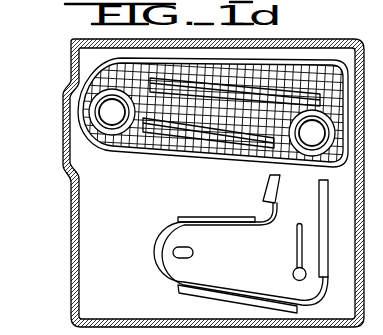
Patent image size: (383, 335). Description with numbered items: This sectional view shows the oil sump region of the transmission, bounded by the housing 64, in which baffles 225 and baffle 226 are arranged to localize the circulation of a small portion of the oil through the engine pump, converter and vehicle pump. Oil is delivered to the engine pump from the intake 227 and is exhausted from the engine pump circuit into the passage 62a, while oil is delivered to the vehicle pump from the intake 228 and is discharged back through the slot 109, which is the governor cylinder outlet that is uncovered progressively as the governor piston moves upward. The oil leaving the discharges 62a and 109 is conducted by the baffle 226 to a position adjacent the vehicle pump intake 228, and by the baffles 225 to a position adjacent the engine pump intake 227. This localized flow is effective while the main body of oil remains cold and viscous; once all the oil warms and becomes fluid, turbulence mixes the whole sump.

The housing 64 is at (80, 267).
The vehicle pump intake 228 is at (178, 102).
The engine pump intake 227 is at (110, 113).
The baffles 225 is at (224, 122).
The baffle 226 is at (180, 220).
The passage 62a is at (180, 253).
The slot 109 is at (297, 245).